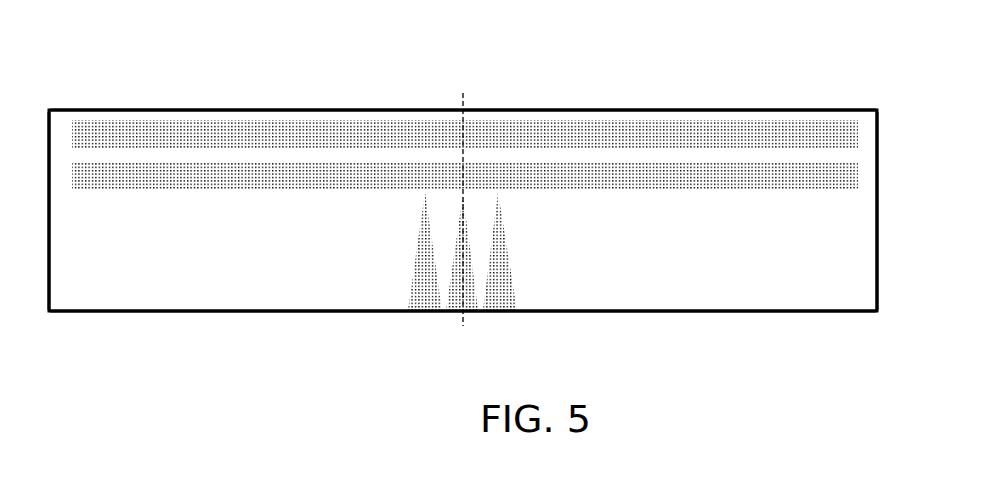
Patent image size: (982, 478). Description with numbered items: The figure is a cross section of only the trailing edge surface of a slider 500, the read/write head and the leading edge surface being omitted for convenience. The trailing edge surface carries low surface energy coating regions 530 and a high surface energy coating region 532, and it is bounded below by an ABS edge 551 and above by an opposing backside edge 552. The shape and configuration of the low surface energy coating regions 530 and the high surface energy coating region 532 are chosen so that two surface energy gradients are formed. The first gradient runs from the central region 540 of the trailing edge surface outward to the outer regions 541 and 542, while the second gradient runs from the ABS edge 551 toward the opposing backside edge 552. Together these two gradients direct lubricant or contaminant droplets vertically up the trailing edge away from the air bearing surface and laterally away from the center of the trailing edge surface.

The slider 500 is at (595, 93).
The low surface energy coating regions 530 is at (215, 264).
The high surface energy coating region 532 is at (417, 247).
The central region 540 is at (460, 322).
The outer region 541 is at (88, 320).
The outer region 542 is at (824, 320).
The ABS edge 551 is at (272, 313).
The opposing backside edge 552 is at (167, 110).